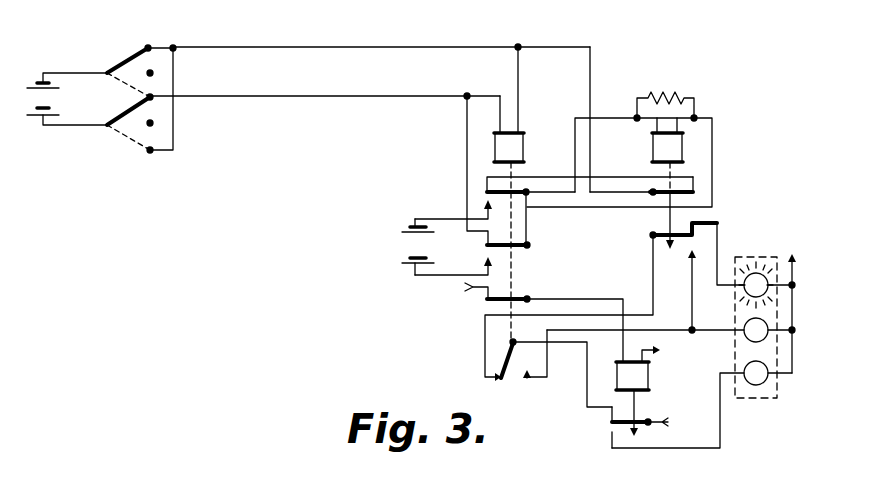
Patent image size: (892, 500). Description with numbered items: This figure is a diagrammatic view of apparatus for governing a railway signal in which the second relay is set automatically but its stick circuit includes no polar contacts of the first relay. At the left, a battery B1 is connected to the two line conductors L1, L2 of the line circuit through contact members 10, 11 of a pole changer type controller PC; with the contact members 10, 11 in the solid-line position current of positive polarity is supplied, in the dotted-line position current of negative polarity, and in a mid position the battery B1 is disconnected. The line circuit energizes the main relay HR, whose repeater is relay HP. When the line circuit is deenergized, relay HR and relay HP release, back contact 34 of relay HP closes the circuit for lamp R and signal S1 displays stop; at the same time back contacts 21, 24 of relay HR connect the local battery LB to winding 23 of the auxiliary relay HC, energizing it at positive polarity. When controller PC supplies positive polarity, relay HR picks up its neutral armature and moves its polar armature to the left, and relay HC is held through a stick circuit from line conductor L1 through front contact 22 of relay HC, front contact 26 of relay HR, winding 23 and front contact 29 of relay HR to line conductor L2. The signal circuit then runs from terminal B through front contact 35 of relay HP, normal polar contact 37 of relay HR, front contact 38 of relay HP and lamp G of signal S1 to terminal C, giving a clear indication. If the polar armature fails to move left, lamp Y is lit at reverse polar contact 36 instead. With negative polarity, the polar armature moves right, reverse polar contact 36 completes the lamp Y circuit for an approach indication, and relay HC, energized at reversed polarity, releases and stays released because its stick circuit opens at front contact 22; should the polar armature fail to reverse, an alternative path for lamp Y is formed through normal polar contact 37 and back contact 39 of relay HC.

The contact member 10 is at (120, 66).
The contact member 11 is at (120, 113).
The back contact 21 is at (485, 205).
The front contact 22 is at (695, 188).
The winding 23 is at (645, 150).
The back contact 24 is at (486, 263).
The front contact 26 is at (487, 185).
The front contact 29 is at (487, 236).
The back contact 34 is at (610, 438).
The front contact 35 is at (610, 414).
The reverse polar contact 36 is at (526, 381).
The normal polar contact 37 is at (498, 379).
The front contact 38 is at (715, 223).
The back contact 39 is at (692, 262).
The controller PC is at (126, 88).
The battery B1 is at (56, 98).
The line conductor L1 is at (349, 44).
The line conductor L2 is at (349, 92).
The main relay HR is at (523, 147).
The auxiliary relay HC is at (660, 170).
The repeater relay HP is at (648, 377).
The local battery LB is at (402, 246).
The signal S1 is at (766, 258).
The terminal B is at (534, 321).
The terminal C is at (791, 304).